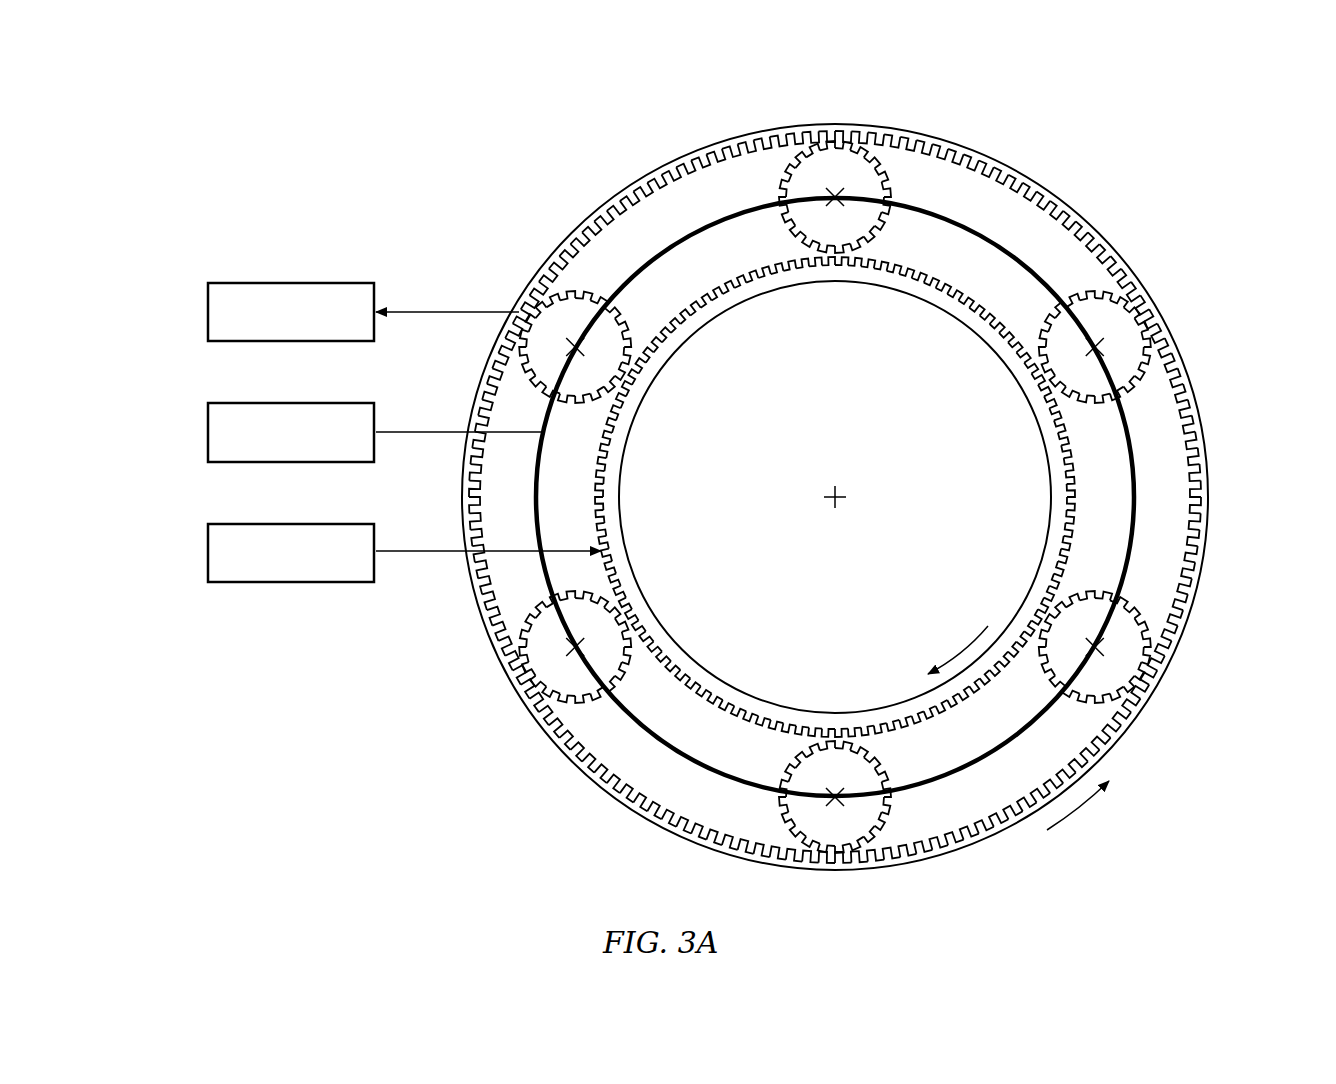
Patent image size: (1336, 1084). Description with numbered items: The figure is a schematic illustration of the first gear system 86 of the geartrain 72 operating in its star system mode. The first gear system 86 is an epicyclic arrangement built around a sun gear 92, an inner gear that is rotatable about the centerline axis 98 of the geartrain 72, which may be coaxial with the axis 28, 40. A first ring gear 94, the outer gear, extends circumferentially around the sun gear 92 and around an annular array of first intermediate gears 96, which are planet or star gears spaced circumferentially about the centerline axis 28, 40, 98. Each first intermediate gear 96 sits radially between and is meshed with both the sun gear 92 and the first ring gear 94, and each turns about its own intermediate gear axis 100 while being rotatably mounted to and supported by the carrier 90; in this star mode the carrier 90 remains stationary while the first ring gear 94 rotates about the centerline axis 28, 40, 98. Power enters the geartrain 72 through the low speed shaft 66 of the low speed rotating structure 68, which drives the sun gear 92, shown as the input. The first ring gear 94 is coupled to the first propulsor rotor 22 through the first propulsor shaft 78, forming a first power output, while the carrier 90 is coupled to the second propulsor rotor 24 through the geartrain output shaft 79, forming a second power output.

The geartrain 72 is at (1227, 113).
The first gear system 86 is at (814, 463).
The first ring gear 94 is at (1062, 190).
The sun gear 92 is at (1040, 416).
The carrier 90 is at (1142, 497).
The first intermediate gears 96 is at (880, 154).
The intermediate gear axis 100 is at (835, 200).
The axis 28 is at (847, 534).
The axis 40 is at (847, 534).
The centerline axis 98 is at (840, 505).
The first propulsor rotor 22 is at (304, 312).
The first propulsor shaft 78 is at (208, 304).
The second propulsor rotor 24 is at (316, 432).
The geartrain output shaft 79 is at (208, 425).
The low speed shaft 66 is at (346, 553).
The low speed rotating structure 68 is at (208, 547).